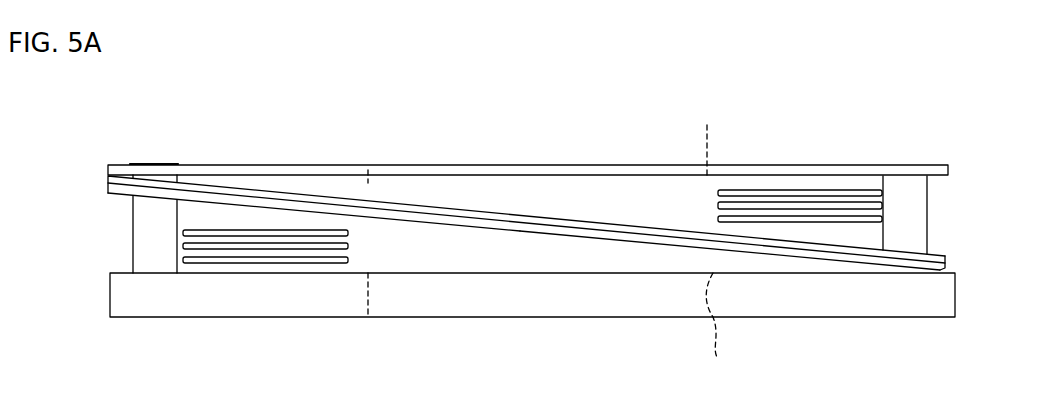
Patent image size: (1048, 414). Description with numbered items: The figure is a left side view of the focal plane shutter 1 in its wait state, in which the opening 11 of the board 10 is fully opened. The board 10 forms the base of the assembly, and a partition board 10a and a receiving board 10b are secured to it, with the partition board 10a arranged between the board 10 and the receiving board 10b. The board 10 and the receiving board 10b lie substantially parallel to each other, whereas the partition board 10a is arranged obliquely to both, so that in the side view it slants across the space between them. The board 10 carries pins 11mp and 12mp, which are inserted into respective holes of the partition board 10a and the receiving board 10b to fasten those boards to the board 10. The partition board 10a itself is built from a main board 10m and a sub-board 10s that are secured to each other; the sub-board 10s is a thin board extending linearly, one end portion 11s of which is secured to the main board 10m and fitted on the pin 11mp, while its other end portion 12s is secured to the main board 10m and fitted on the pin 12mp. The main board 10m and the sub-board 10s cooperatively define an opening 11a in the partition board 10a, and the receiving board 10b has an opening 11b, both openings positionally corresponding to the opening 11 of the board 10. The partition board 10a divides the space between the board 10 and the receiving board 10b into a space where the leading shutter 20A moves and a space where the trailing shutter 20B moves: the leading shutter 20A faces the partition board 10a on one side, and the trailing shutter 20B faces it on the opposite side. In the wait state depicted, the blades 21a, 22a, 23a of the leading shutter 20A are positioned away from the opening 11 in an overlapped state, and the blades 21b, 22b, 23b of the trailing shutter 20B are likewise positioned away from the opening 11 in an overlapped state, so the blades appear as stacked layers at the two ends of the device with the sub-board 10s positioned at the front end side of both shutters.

The focal plane shutter 1 is at (932, 113).
The board 10 is at (826, 293).
The partition board 10a is at (212, 204).
The receiving board 10b is at (857, 176).
The sub-board 10s is at (285, 195).
The main board 10m is at (252, 221).
The opening 11 is at (545, 326).
The opening 11a is at (710, 238).
The opening 11b is at (544, 142).
The end portion 11s is at (898, 272).
The pin 11mp is at (915, 198).
The other end portion 12s is at (202, 178).
The pin 12mp is at (150, 209).
The leading shutter 20A is at (679, 127).
The blade 21a is at (718, 192).
The blade 22a is at (718, 206).
The blade 23a is at (718, 218).
The trailing shutter 20B is at (361, 322).
The blade 21b is at (287, 311).
The blade 22b is at (348, 246).
The blade 23b is at (348, 233).